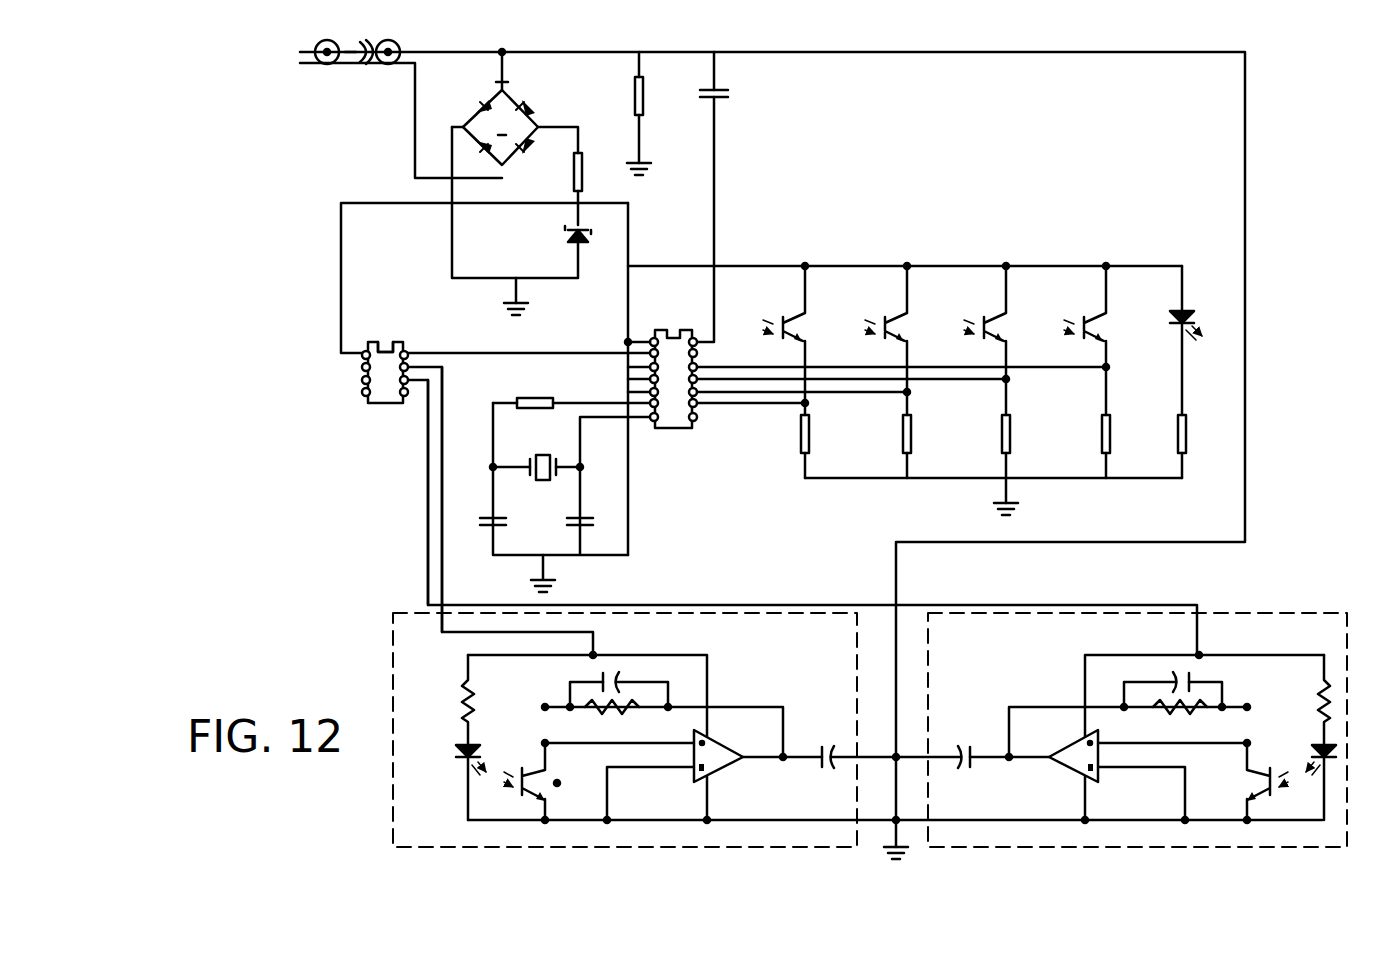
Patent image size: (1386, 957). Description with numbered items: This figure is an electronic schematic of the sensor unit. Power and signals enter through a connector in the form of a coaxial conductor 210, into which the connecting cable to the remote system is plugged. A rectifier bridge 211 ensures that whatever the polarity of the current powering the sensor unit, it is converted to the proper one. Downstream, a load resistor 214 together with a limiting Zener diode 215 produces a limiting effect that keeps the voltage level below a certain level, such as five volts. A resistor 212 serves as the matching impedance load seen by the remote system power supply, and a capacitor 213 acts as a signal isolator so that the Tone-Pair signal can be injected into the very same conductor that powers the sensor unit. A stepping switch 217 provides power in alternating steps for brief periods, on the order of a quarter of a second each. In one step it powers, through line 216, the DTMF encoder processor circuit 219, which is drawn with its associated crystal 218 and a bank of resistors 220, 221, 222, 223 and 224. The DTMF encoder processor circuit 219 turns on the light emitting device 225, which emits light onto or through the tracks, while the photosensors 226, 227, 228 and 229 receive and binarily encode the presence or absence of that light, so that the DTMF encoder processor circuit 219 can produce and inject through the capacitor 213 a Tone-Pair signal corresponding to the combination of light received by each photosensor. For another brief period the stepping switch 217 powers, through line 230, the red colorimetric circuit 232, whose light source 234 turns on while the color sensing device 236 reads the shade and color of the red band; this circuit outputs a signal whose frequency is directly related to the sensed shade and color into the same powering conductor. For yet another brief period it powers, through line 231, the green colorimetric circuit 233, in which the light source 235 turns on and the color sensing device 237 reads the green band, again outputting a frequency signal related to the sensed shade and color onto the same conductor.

The coaxial conductor 210 is at (332, 85).
The rectifier bridge 211 is at (515, 95).
The resistor 212 is at (650, 80).
The capacitor 213 is at (728, 93).
The load resistor 214 is at (563, 172).
The limiting Zener diode 215 is at (565, 240).
The line 216 is at (477, 357).
The stepping switch 217 is at (395, 337).
The crystal oscillator 218 is at (545, 450).
The DTMF encoder processor circuit 219 is at (673, 436).
The resistor 220 is at (813, 418).
The resistor 221 is at (915, 418).
The resistor 222 is at (1014, 418).
The resistor 223 is at (1114, 418).
The resistor 224 is at (1190, 418).
The light emitting device 225 is at (1197, 311).
The photosensor 226 is at (1112, 320).
The photosensor 227 is at (1012, 320).
The photosensor 228 is at (916, 318).
The photosensor 229 is at (814, 318).
The line 230 is at (440, 453).
The line 231 is at (427, 490).
The red colorimetric circuit 232 is at (390, 612).
The green colorimetric circuit 233 is at (1308, 612).
The light source 234 is at (489, 797).
The light source 235 is at (1310, 777).
The color sensing device 236 is at (553, 805).
The color sensing device 237 is at (1238, 795).